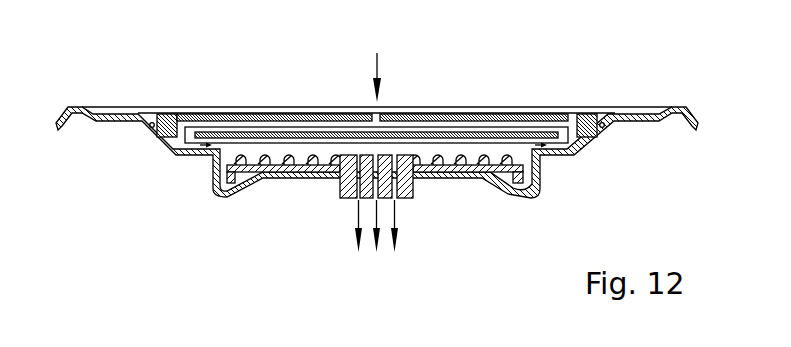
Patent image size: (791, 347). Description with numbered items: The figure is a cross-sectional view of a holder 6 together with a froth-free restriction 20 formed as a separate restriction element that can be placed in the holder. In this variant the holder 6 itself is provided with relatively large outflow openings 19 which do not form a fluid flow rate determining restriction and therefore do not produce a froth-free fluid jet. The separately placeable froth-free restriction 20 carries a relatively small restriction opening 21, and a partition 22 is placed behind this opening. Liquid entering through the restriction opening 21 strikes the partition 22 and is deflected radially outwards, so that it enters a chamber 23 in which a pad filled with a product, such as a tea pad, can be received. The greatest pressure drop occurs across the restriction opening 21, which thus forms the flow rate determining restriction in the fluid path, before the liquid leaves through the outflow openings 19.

The holder 6 is at (484, 95).
The outflow openings 19 is at (343, 211).
The froth-free restriction 20 is at (586, 131).
The restriction opening 21 is at (313, 121).
The partition 22 is at (439, 137).
The chamber 23 is at (253, 143).